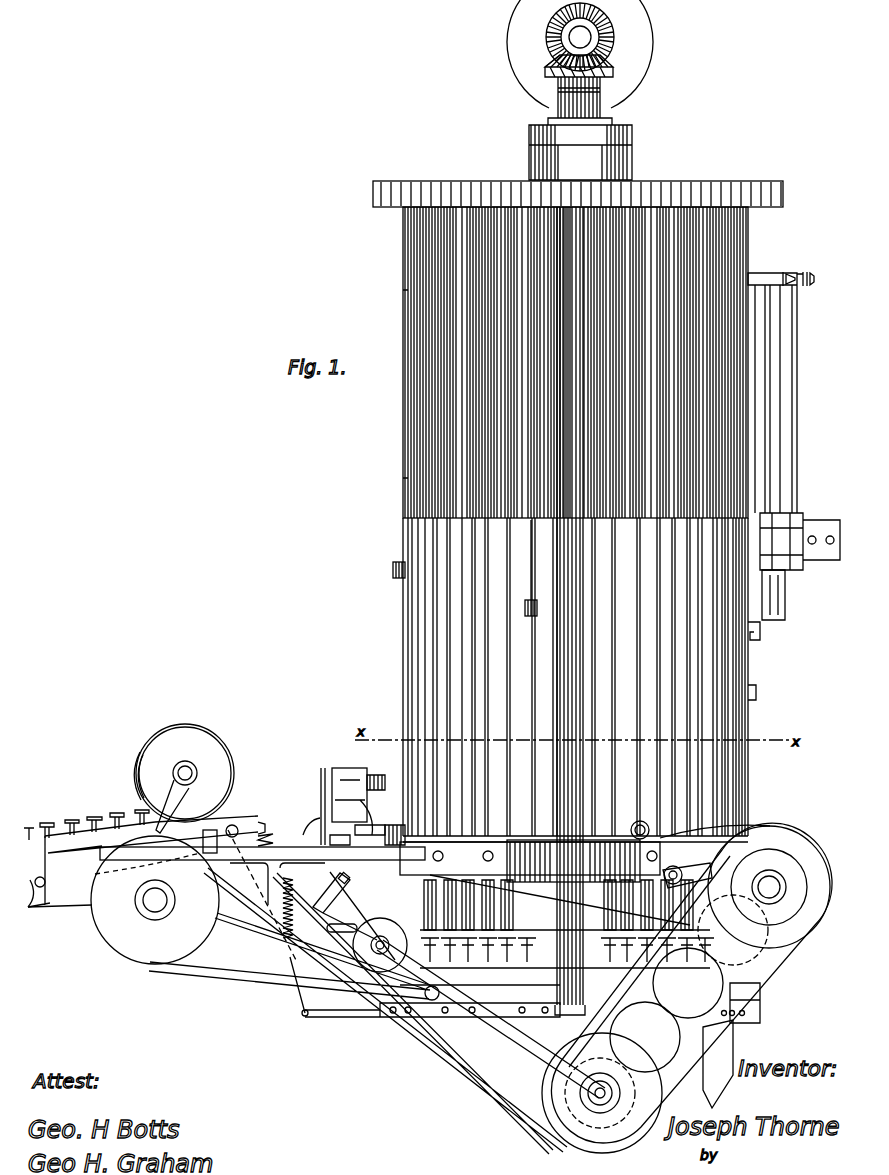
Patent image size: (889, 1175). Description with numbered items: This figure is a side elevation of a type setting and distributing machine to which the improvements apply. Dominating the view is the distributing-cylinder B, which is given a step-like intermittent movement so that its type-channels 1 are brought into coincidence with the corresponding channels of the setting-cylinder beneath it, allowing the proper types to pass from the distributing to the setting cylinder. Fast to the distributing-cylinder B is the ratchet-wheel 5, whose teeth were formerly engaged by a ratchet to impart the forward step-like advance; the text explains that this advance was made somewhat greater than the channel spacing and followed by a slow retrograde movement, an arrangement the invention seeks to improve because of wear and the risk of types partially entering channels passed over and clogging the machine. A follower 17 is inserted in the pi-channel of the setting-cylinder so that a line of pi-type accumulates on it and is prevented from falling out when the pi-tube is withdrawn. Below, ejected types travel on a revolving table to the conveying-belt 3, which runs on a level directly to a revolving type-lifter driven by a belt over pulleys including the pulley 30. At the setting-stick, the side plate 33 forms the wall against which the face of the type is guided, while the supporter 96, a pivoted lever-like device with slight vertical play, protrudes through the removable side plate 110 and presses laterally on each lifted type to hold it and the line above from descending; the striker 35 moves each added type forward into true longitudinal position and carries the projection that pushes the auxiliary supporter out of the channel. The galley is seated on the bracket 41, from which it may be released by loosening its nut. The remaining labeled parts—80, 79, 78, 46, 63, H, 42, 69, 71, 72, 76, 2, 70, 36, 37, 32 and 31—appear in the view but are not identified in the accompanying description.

The ring 80 is at (512, 22).
The gear 79 is at (614, 40).
The bevel gear 78 is at (613, 70).
The ratchet-wheel 5 is at (746, 178).
The distributing-cylinder B is at (440, 368).
The rods 46 is at (577, 359).
The central shaft 63 is at (570, 606).
The type-channels 1 is at (717, 585).
The follower 17 is at (520, 624).
The rod frame H is at (430, 656).
The bracket 41 is at (762, 633).
The bracket 42 is at (757, 701).
The wheel 69 is at (212, 746).
The wheel face 71 is at (184, 743).
The hub 72 is at (196, 775).
The lever 76 is at (134, 766).
The bar 2 is at (60, 829).
The bolts 70 is at (86, 827).
The side plate 33 is at (321, 774).
The removable side plate 110 is at (358, 801).
The striker 35 is at (380, 825).
The block 36 is at (395, 830).
The supporter 96 is at (326, 831).
The pulley 37 is at (368, 928).
The conveying-belt 3 is at (476, 877).
The roller 32 is at (604, 820).
The pulley 30 is at (691, 983).
The rollers 31 is at (655, 1024).